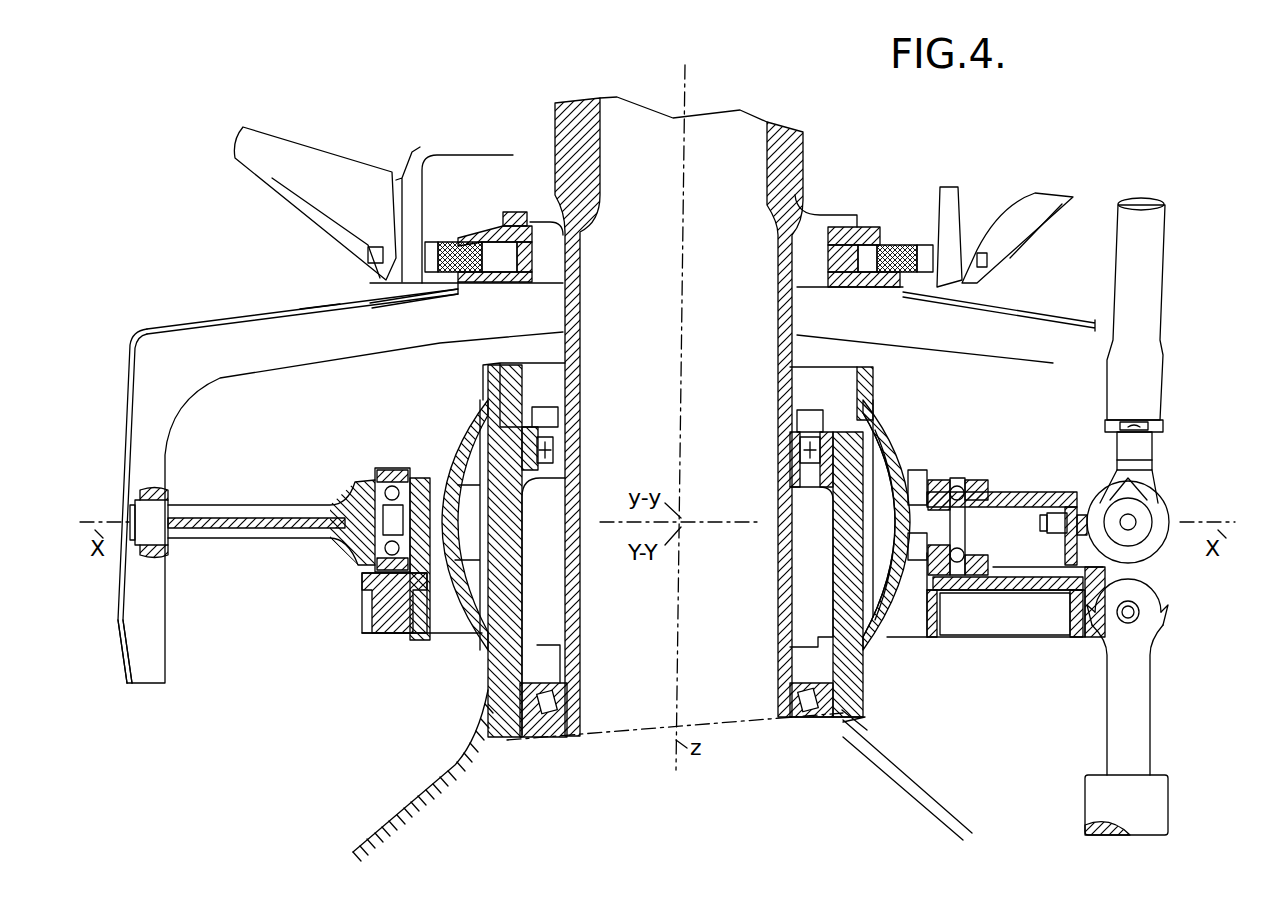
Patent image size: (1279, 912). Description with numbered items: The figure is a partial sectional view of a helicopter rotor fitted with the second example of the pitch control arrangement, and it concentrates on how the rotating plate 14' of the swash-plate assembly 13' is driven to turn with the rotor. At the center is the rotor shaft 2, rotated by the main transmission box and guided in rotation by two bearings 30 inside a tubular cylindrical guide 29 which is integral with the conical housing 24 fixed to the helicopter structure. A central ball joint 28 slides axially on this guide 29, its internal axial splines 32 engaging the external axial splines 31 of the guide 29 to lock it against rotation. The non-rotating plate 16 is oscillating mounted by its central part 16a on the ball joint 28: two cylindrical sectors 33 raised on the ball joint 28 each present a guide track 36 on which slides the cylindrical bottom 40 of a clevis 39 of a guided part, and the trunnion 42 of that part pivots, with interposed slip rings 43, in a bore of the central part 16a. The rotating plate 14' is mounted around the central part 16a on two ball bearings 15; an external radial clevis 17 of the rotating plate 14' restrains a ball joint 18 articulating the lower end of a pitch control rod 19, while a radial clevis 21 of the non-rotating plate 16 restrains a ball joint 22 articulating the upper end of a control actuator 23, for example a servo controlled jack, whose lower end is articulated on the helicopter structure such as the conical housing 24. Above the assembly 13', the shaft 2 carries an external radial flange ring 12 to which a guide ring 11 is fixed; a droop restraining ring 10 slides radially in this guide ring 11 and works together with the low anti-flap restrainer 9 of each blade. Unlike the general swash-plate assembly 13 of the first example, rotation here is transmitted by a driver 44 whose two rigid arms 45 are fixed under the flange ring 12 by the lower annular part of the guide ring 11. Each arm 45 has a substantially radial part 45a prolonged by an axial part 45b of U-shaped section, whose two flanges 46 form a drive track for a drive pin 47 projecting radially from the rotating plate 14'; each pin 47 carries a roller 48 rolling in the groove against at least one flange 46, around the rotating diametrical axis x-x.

The rotor shaft 2 is at (573, 310).
The low anti-flap restrainer 9 is at (1010, 245).
The droop restraining ring 10 is at (880, 285).
The guide ring 11 is at (500, 282).
The external radial flange ring 12 is at (520, 213).
The swash-plate assembly 13 is at (1178, 460).
The swash-plate assembly 13' is at (271, 484).
The rotating plate 14' is at (1015, 496).
The ball bearings 15 is at (977, 487).
The non-rotating plate 16 is at (1020, 640).
The central part of the non-rotating plate 16a is at (932, 640).
The external radial clevis 17 is at (1078, 513).
The ball joint 18 is at (1140, 515).
The pitch control rod 19 is at (1138, 257).
The external radial clevis 21 is at (1092, 653).
The ball joint 22 is at (1132, 612).
The control actuator 23 is at (1137, 800).
The conical housing 24 is at (918, 785).
The central ball joint 28 is at (887, 475).
The tubular cylindrical guide 29 is at (475, 668).
The bearings 30 is at (797, 447).
The axial splines 31 is at (484, 380).
The internal axial splines 32 is at (486, 418).
The cylindrical sector 33 is at (897, 592).
The guide track 36 is at (895, 470).
The clevis 39 is at (950, 472).
The bottom 40 is at (905, 543).
The trunnion 42 is at (942, 484).
The slip rings 43 is at (943, 590).
The driver 44 is at (236, 312).
The rigid arm 45 is at (160, 328).
The radial arm part 45a is at (297, 308).
The axial arm part 45b is at (120, 452).
The flanges 46 is at (135, 610).
The drive pin 47 is at (175, 495).
The roller 48 is at (155, 548).